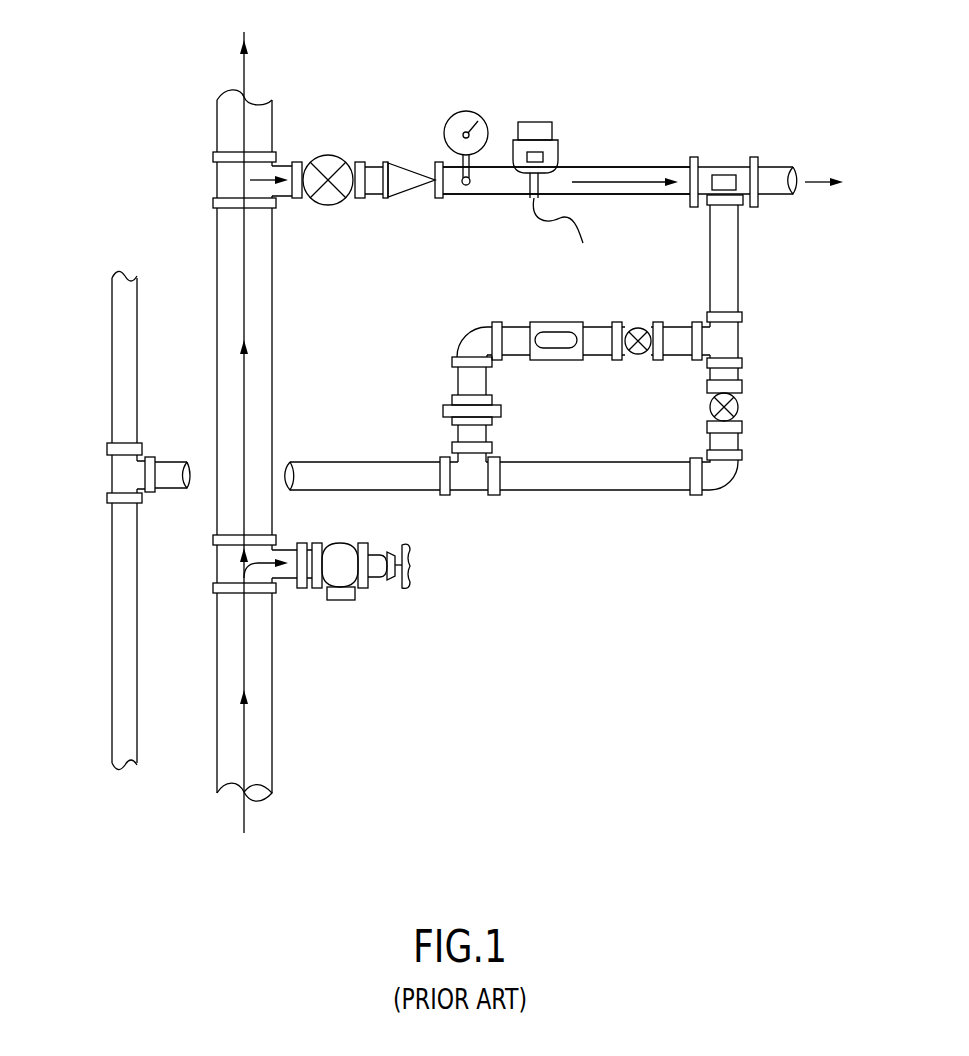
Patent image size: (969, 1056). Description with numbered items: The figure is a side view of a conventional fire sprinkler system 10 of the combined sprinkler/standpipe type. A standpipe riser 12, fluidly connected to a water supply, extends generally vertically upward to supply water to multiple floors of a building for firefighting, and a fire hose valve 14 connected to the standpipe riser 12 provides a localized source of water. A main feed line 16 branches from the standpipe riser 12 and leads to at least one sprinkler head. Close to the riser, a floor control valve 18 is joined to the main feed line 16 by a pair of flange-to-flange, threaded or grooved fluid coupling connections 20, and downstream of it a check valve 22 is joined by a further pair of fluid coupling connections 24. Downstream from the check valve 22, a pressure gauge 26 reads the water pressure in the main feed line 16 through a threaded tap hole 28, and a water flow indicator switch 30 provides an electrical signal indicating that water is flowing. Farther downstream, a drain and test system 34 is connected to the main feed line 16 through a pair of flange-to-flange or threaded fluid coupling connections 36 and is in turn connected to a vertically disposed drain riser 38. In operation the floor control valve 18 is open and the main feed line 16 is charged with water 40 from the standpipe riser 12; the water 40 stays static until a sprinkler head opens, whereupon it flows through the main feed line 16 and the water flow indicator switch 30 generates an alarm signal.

The fire sprinkler system 10 is at (672, 85).
The standpipe riser 12 is at (284, 715).
The fire hose valve 14 is at (338, 543).
The main feed line 16 is at (603, 166).
The floor control valve 18 is at (328, 154).
The fluid coupling connections 20 is at (297, 162).
The check valve 22 is at (408, 190).
The fluid coupling connections 24 is at (385, 199).
The pressure gauge 26 is at (467, 111).
The threaded tap hole 28 is at (470, 185).
The water flow indicator switch 30 is at (535, 121).
The drain and test system 34 is at (758, 405).
The fluid coupling connections 36 is at (695, 157).
The drain riser 38 is at (95, 558).
The water 40 is at (260, 178).